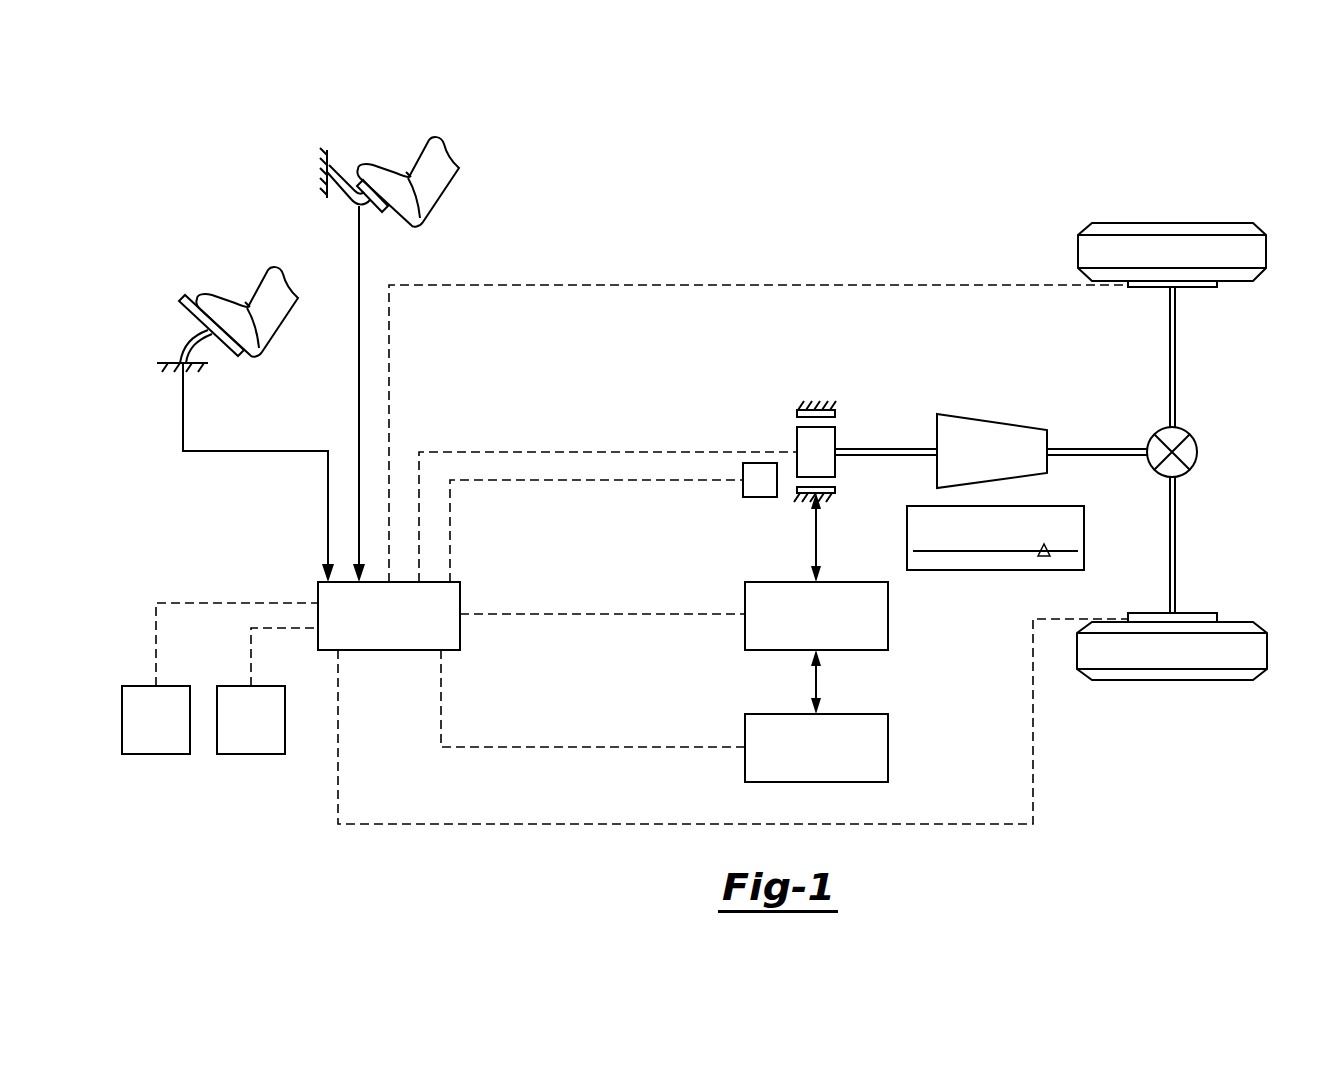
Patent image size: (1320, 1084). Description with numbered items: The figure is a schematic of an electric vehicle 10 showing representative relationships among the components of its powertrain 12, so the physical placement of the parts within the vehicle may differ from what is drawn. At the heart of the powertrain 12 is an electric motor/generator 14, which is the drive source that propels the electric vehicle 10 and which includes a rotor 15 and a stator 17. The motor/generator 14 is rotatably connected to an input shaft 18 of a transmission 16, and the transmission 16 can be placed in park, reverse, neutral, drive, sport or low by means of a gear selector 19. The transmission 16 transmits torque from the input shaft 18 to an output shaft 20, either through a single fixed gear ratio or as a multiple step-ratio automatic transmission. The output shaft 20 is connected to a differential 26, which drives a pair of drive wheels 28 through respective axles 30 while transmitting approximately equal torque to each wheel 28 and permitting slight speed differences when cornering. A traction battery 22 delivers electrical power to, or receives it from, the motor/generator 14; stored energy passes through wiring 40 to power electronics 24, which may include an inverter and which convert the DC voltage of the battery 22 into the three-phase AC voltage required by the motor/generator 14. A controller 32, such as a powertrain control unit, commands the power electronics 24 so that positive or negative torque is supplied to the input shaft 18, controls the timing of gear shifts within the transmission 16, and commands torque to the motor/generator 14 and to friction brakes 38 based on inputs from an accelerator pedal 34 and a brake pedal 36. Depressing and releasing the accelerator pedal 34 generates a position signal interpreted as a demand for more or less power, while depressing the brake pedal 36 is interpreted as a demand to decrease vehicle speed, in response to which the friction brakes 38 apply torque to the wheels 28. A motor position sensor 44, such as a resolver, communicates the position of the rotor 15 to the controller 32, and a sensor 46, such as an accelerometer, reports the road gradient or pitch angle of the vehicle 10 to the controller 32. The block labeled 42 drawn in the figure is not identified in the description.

The electric vehicle 10 is at (1020, 150).
The powertrain 12 is at (850, 345).
The electric motor/generator 14 is at (780, 443).
The rotor 15 is at (797, 432).
The transmission 16 is at (992, 416).
The stator 17 is at (797, 412).
The input shaft 18 is at (887, 450).
The gear selector 19 is at (1084, 538).
The output shaft 20 is at (1097, 447).
The traction battery 22 is at (888, 750).
The power electronics 24 is at (888, 614).
The differential 26 is at (1198, 452).
The drive wheels 28 is at (1173, 222).
The axles 30 is at (1176, 357).
The controller 32 is at (391, 652).
The accelerator pedal 34 is at (212, 262).
The brake pedal 36 is at (378, 128).
The friction brakes 38 is at (1218, 284).
The wiring 40 is at (818, 682).
The user interface 42 is at (156, 756).
The motor position sensor 44 is at (743, 490).
The sensor 46 is at (251, 756).